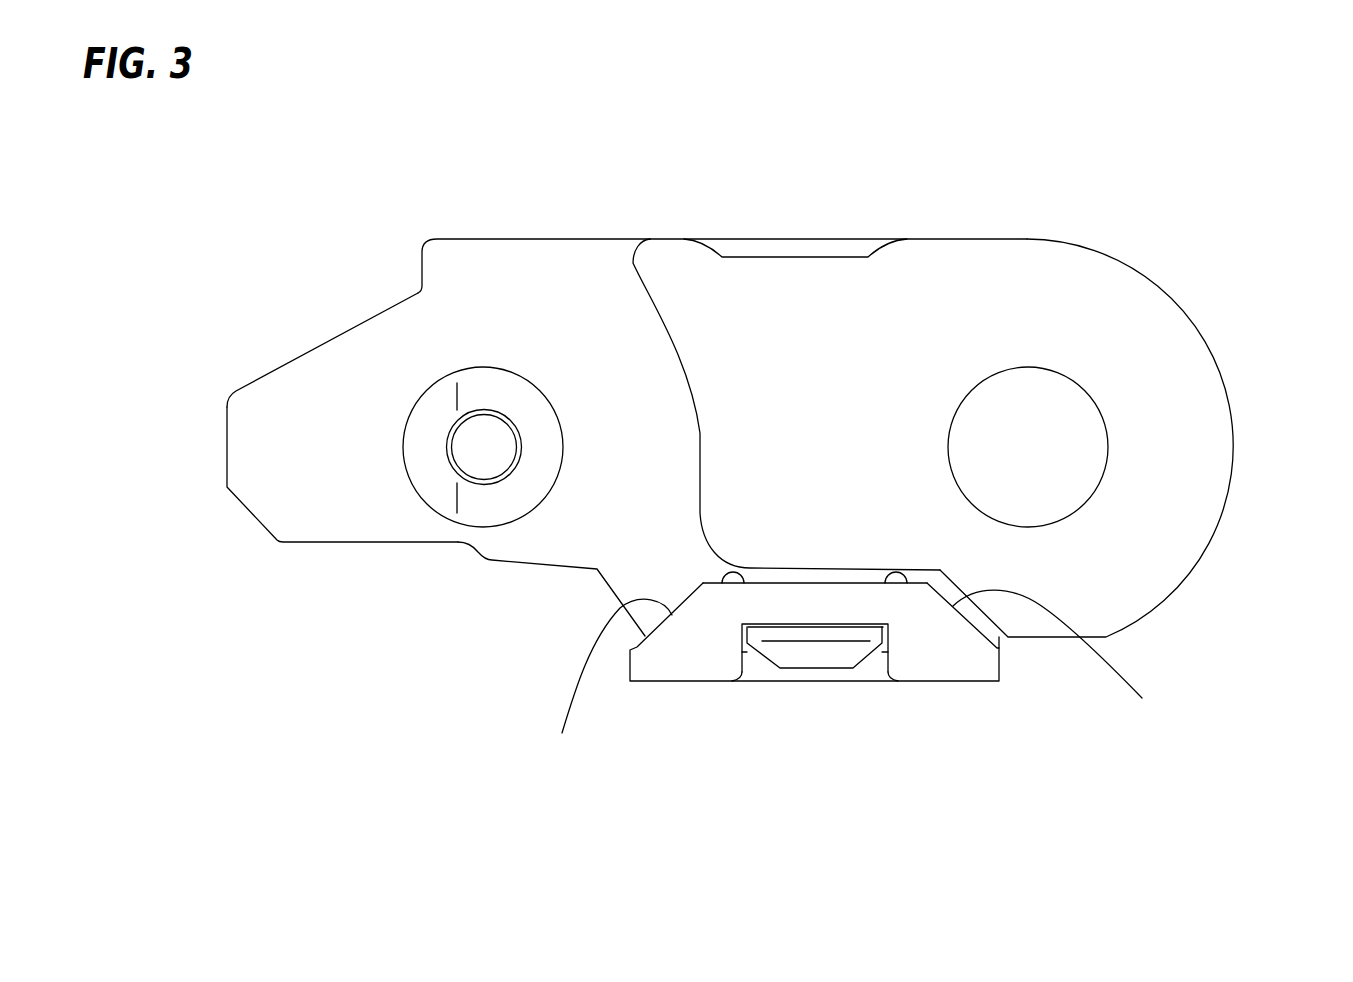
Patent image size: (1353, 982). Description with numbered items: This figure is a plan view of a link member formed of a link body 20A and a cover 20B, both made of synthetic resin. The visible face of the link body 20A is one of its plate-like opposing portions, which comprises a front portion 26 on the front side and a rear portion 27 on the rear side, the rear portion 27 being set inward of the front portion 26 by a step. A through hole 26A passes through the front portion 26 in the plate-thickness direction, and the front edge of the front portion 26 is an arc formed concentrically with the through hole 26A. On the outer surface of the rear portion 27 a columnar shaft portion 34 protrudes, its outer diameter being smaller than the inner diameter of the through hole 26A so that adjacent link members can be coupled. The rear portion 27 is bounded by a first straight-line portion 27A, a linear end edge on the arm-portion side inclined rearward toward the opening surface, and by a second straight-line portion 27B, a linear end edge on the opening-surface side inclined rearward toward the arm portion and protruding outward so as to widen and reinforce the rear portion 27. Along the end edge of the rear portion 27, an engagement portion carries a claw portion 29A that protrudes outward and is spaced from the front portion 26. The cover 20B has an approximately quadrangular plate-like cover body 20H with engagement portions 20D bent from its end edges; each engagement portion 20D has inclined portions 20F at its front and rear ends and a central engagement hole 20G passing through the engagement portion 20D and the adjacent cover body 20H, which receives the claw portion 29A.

The link body 20A is at (905, 273).
The cover 20B is at (853, 720).
The engagement portion 20D is at (935, 643).
The inclined portion 20F is at (860, 678).
The engagement hole 20G is at (743, 655).
The cover body 20H is at (982, 682).
The front portion 26 is at (1197, 438).
The through hole 26A is at (1092, 401).
The rear portion 27 is at (288, 438).
The first straight-line portion 27A is at (338, 337).
The second straight-line portion 27B is at (535, 565).
The claw portion 29A is at (797, 633).
The shaft portion 34 is at (487, 505).